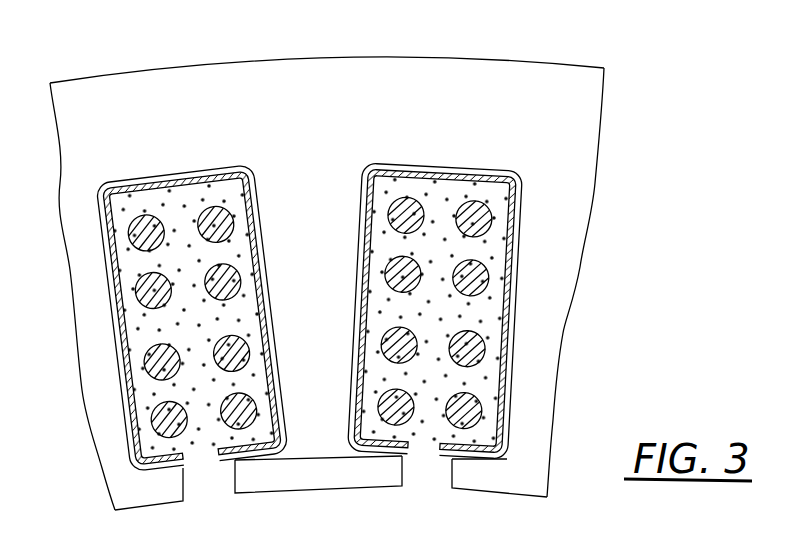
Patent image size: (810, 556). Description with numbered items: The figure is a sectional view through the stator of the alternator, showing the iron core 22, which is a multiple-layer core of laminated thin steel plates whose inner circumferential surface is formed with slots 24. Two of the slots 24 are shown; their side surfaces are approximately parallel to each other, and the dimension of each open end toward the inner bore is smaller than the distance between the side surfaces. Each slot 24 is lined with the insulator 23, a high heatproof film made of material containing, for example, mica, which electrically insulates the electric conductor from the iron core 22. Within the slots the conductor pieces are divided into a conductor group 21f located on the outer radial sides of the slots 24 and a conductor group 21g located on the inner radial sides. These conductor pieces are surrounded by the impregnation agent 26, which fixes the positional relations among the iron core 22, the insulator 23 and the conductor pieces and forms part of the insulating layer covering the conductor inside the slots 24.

The iron core 22 is at (249, 73).
The insulator 23 is at (473, 174).
The slot 24 is at (105, 295).
The impregnation agent 26 is at (380, 238).
The conductor group 21f is at (580, 240).
The conductor group 21g is at (550, 392).